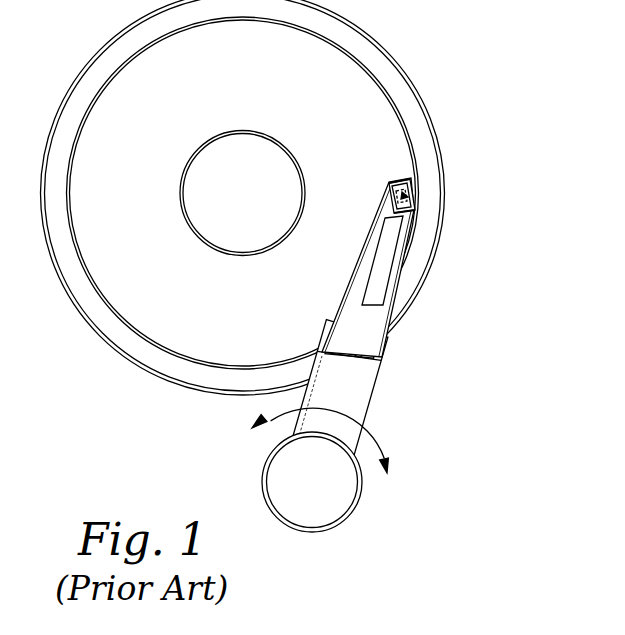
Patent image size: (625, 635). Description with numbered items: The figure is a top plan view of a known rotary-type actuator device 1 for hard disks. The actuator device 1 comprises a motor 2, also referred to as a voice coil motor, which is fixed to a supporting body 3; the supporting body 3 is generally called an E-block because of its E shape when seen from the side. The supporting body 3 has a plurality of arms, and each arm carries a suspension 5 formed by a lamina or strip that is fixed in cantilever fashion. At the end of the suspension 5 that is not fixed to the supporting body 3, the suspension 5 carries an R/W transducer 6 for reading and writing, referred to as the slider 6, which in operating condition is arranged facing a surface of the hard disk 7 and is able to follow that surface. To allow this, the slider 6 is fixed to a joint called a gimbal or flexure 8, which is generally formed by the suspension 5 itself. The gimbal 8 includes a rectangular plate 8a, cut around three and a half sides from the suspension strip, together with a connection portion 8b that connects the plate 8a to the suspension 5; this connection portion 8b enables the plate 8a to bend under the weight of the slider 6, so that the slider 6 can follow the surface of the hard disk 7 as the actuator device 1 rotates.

The actuator device 1 is at (371, 456).
The motor 2 is at (337, 497).
The supporting body 3 is at (382, 398).
The suspension 5 is at (384, 293).
The R/W transducer 6 is at (420, 194).
The hard disk 7 is at (411, 115).
The gimbal 8 is at (425, 204).
The rectangular plate 8a is at (410, 210).
The connection portion 8b is at (407, 183).